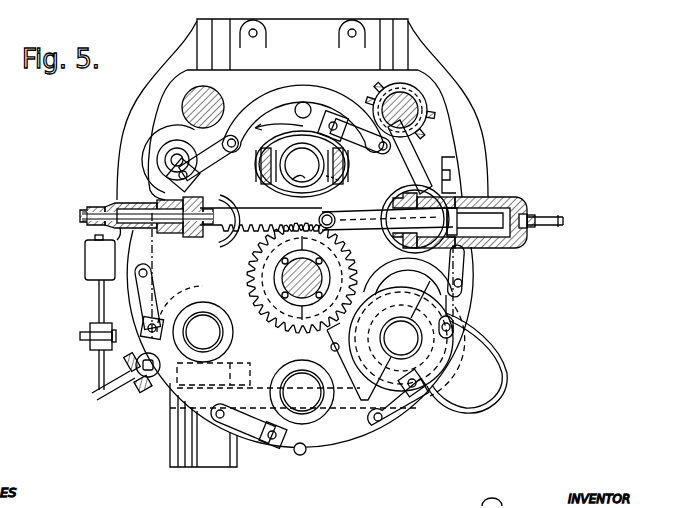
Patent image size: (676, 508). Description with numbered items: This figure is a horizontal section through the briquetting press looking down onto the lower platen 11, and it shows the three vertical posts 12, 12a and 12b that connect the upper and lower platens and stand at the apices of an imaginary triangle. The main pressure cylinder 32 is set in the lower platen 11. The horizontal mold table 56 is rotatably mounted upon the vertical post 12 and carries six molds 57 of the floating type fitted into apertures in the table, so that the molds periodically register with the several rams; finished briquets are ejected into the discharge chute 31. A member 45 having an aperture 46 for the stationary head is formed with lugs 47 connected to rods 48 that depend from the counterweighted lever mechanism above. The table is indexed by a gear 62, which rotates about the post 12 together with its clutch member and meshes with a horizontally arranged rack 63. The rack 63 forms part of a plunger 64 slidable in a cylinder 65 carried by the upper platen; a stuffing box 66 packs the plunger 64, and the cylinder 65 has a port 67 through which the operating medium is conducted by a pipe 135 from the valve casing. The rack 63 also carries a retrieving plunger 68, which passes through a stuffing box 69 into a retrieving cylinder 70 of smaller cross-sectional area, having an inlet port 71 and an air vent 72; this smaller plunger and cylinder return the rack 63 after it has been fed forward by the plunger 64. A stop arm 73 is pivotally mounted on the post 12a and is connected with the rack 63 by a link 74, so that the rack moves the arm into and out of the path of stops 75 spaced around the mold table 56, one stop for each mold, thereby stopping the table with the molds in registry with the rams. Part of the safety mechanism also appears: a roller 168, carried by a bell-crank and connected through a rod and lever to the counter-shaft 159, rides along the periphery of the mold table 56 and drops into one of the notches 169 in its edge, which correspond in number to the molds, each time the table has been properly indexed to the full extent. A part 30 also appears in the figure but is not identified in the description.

The lower platen 11 is at (290, 72).
The vertical post 12 is at (282, 278).
The vertical post 12a is at (417, 100).
The vertical post 12b is at (182, 105).
The cover 30 is at (507, 364).
The discharge chute 31 is at (172, 425).
The main pressure cylinder 32 is at (268, 100).
The member 45 is at (270, 145).
The aperture 46 is at (280, 188).
The lugs 47 is at (258, 164).
The rods 48 is at (336, 180).
The mold table 56 is at (355, 436).
The molds 57 is at (235, 335).
The gear 62 is at (343, 250).
The rack 63 is at (255, 232).
The plunger 64 is at (460, 220).
The cylinder 65 is at (503, 198).
The stuffing box 66 is at (435, 246).
The port 67 is at (528, 206).
The retrieving plunger 68 is at (162, 233).
The stuffing box 69 is at (190, 238).
The retrieving cylinder 70 is at (130, 203).
The inlet port 71 is at (80, 215).
The air vent 72 is at (85, 253).
The stop arm 73 is at (430, 152).
The link 74 is at (394, 186).
The stops 75 is at (333, 120).
The pipe 135 is at (540, 230).
The counter-shaft 159 is at (81, 346).
The roller 168 is at (128, 390).
The notches 169 is at (303, 450).